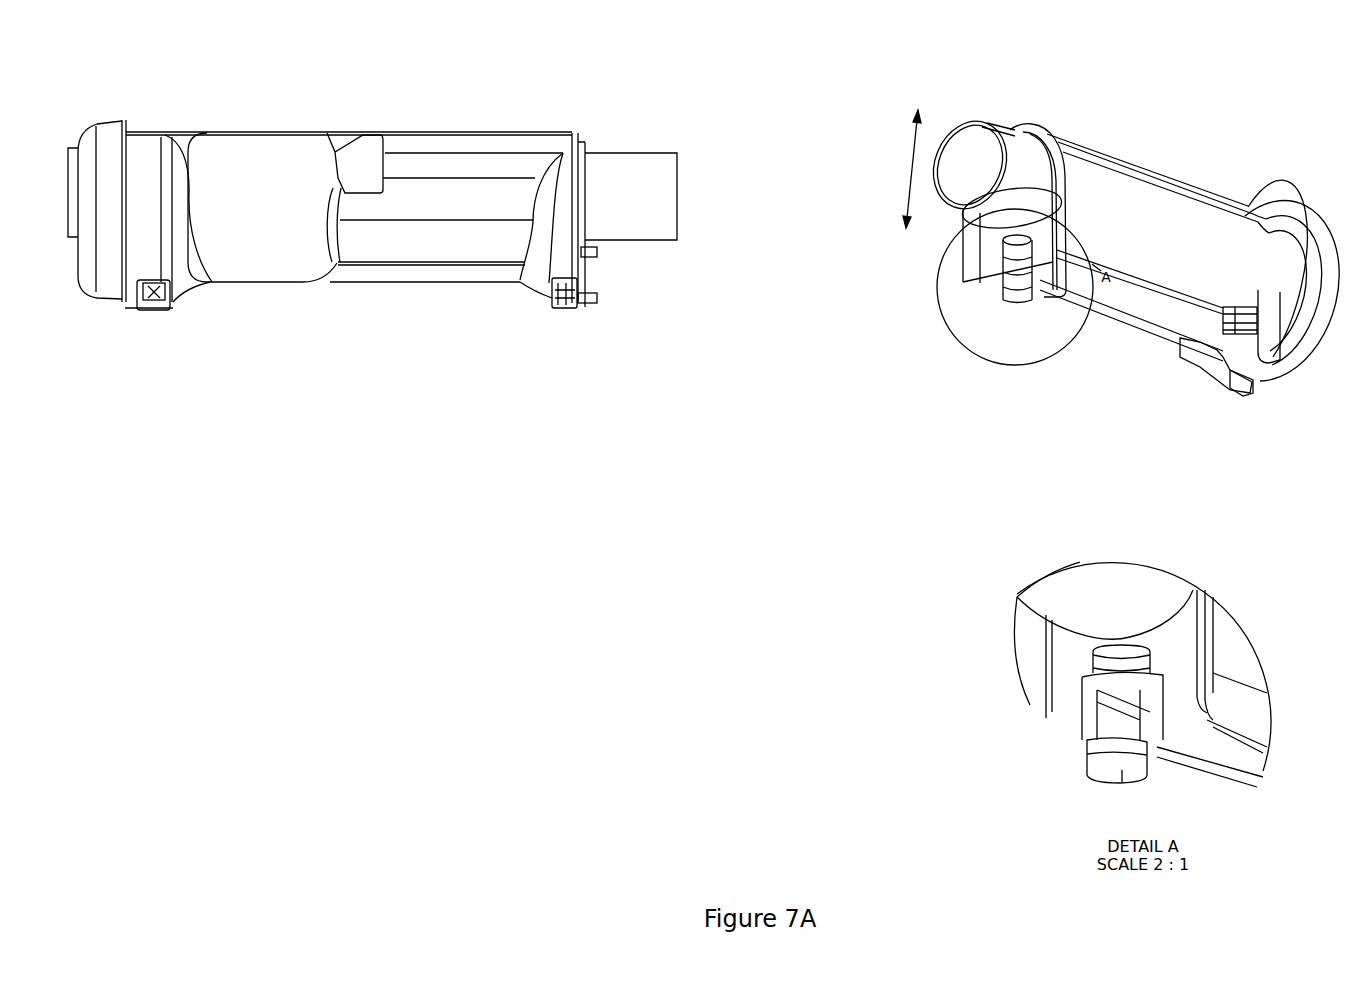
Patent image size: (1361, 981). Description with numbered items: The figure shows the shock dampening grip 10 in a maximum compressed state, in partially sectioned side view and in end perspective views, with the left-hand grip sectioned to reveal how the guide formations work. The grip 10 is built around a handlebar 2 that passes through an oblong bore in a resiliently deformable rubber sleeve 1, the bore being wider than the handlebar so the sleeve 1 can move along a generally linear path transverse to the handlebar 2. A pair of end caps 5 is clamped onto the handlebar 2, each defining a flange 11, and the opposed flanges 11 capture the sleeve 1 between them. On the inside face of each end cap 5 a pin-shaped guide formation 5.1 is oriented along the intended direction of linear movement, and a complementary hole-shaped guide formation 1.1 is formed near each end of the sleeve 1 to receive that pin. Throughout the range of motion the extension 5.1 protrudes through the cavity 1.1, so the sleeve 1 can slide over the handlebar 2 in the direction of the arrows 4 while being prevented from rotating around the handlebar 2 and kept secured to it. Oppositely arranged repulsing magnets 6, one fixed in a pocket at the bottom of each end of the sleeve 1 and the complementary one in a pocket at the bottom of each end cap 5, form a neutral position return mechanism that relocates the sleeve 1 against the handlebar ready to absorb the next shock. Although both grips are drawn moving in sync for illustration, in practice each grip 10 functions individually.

The sleeve 1 is at (407, 140).
The guide formation (hole) 1.1 is at (138, 298).
The handlebar 2 is at (618, 178).
The arrows 4 is at (901, 169).
The end cap 5 is at (105, 135).
The guide formation (pin) 5.1 is at (155, 304).
The repulsing magnet 6 is at (597, 252).
The shock dampening grip 10 is at (268, 170).
The flange 11 is at (128, 120).